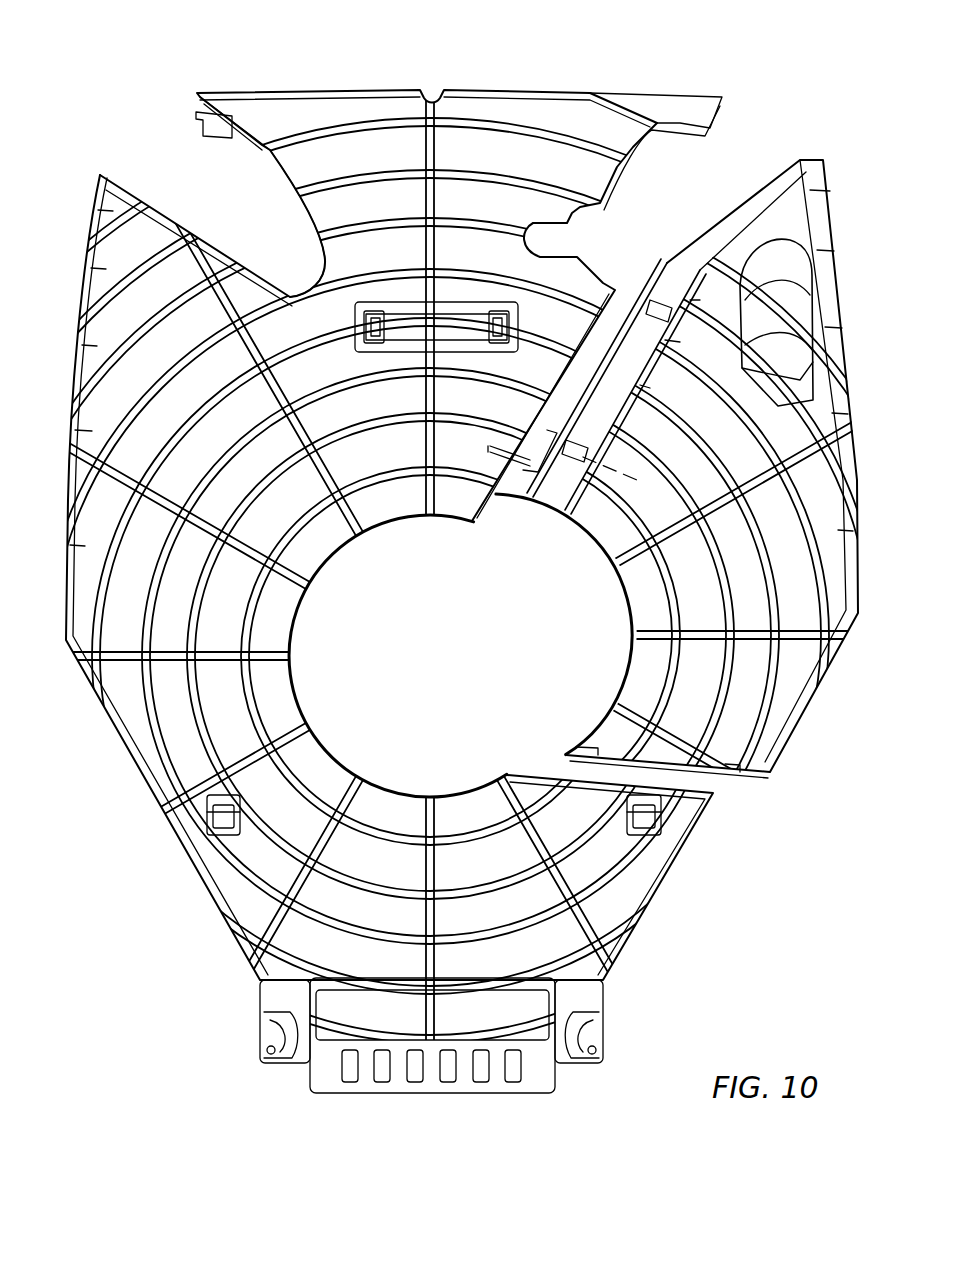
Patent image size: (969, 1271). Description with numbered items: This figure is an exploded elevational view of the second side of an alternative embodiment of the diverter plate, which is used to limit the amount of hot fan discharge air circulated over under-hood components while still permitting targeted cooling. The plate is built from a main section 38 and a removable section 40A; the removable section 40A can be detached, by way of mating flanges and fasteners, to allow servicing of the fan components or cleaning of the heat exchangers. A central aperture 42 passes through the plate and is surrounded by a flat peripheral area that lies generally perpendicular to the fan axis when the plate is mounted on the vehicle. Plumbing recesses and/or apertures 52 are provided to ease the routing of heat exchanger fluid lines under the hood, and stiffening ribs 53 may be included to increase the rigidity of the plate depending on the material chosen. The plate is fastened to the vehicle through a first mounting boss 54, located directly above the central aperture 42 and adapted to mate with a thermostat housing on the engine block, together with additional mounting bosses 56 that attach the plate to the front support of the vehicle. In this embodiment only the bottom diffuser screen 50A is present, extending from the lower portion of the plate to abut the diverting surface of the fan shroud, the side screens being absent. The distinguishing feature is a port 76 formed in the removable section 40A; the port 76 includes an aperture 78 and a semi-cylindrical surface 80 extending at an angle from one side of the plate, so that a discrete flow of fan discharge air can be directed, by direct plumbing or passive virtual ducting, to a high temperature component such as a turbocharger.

The main section 38 is at (106, 330).
The removable section 40A is at (835, 573).
The central aperture 42 is at (436, 633).
The bottom diffuser screen 50A is at (478, 1092).
The plumbing recesses and/or apertures 52 is at (175, 162).
The stiffening ribs 53 is at (375, 182).
The first mounting boss 54 is at (420, 326).
The additional mounting bosses 56 is at (214, 836).
The port 76 is at (738, 384).
The aperture 78 is at (780, 385).
The semi-cylindrical surface 80 is at (787, 322).